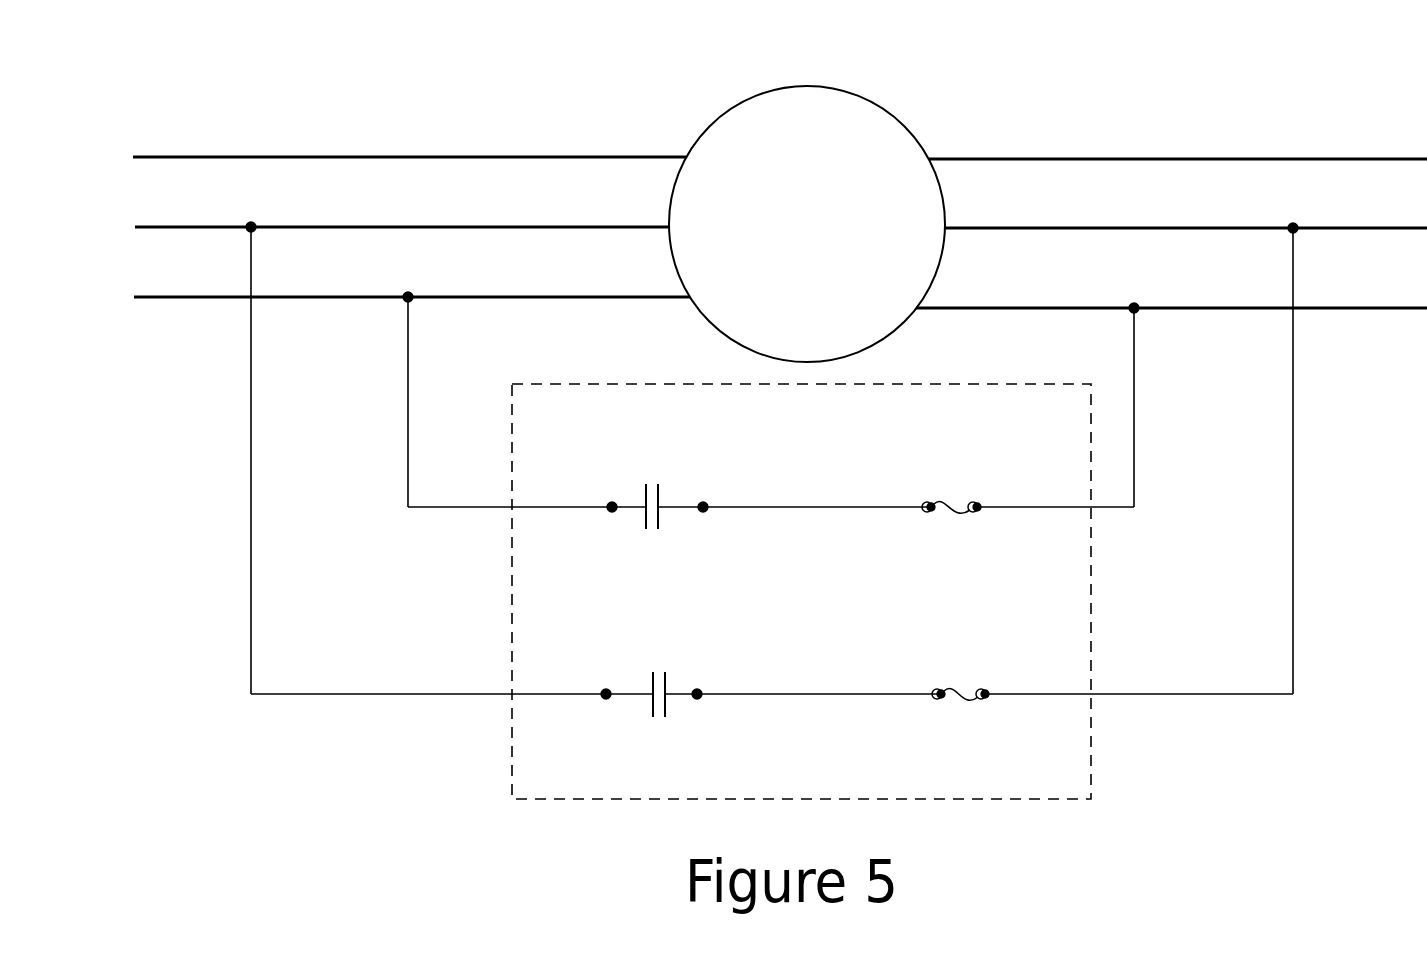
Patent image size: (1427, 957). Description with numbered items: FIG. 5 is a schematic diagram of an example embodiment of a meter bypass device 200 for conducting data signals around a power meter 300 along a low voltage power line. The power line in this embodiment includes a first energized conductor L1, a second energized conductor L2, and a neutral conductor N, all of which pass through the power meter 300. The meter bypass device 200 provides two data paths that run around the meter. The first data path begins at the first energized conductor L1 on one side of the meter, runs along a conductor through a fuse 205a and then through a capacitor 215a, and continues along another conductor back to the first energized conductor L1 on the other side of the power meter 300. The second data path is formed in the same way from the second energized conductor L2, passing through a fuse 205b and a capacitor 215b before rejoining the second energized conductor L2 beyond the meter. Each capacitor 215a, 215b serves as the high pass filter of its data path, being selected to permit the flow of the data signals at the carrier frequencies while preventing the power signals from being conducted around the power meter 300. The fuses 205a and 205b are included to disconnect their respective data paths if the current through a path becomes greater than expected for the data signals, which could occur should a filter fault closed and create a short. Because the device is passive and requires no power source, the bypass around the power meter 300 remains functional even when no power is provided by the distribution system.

The meter bypass device 200 is at (1112, 789).
The fuse 205a is at (952, 493).
The fuse 205b is at (962, 678).
The capacitor 215a is at (672, 486).
The capacitor 215b is at (672, 673).
The power meter 300 is at (807, 224).
The neutral conductor N is at (450, 138).
The first energized conductor L1 is at (400, 215).
The second energized conductor L2 is at (371, 286).